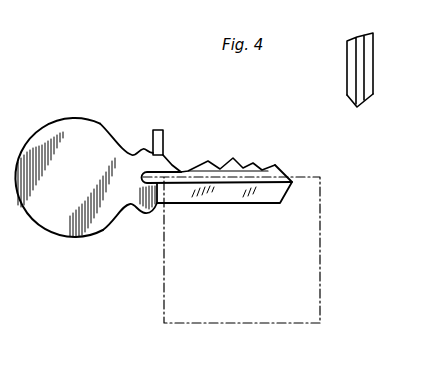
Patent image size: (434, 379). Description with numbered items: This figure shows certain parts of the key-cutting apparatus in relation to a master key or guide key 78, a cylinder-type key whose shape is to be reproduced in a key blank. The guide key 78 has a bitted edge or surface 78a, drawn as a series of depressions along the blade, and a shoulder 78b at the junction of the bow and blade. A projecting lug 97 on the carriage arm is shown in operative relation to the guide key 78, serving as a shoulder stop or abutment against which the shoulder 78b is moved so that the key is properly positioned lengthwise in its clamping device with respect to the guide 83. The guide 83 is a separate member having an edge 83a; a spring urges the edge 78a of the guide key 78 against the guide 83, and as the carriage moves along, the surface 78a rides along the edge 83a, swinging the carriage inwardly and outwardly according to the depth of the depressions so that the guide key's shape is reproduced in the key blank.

The master key or guide key 78 is at (97, 226).
The edge of guide key 78a is at (234, 157).
The shoulder of guide key 78b is at (143, 148).
The projecting lug 97 is at (163, 134).
The guide 83 is at (346, 68).
The edge of guide 83a is at (351, 97).